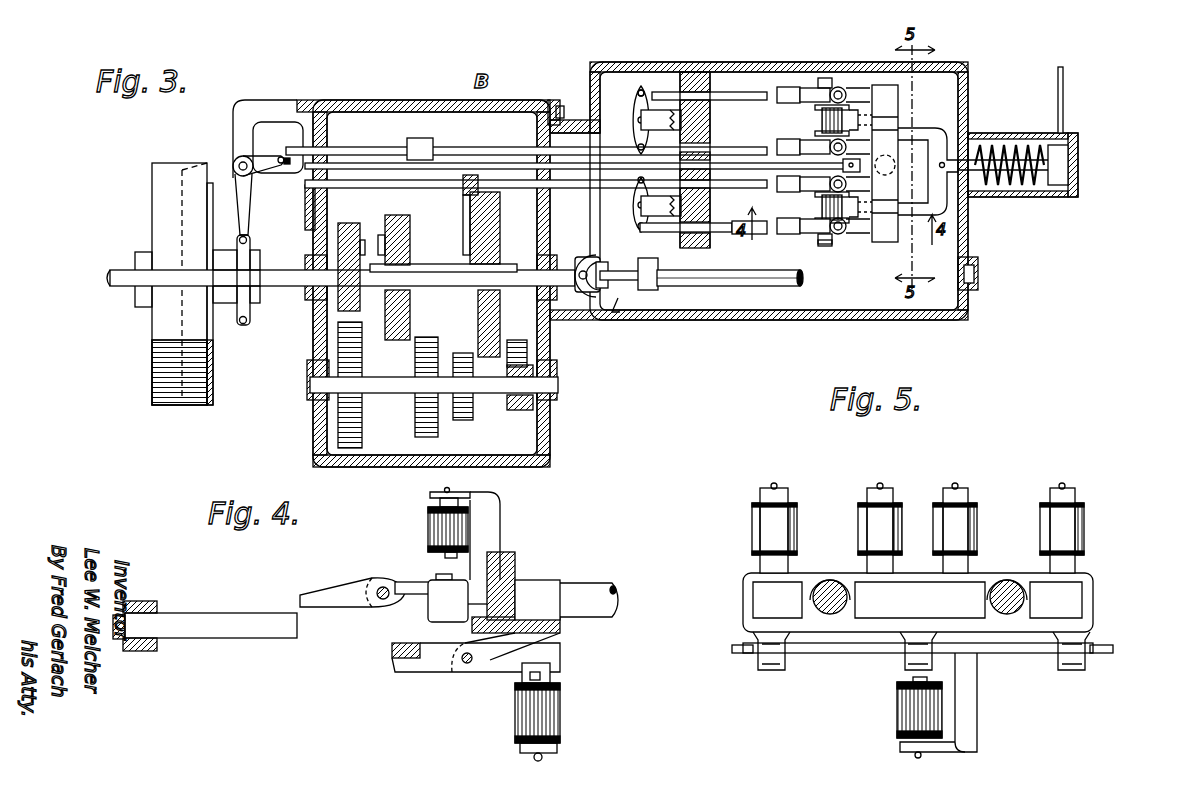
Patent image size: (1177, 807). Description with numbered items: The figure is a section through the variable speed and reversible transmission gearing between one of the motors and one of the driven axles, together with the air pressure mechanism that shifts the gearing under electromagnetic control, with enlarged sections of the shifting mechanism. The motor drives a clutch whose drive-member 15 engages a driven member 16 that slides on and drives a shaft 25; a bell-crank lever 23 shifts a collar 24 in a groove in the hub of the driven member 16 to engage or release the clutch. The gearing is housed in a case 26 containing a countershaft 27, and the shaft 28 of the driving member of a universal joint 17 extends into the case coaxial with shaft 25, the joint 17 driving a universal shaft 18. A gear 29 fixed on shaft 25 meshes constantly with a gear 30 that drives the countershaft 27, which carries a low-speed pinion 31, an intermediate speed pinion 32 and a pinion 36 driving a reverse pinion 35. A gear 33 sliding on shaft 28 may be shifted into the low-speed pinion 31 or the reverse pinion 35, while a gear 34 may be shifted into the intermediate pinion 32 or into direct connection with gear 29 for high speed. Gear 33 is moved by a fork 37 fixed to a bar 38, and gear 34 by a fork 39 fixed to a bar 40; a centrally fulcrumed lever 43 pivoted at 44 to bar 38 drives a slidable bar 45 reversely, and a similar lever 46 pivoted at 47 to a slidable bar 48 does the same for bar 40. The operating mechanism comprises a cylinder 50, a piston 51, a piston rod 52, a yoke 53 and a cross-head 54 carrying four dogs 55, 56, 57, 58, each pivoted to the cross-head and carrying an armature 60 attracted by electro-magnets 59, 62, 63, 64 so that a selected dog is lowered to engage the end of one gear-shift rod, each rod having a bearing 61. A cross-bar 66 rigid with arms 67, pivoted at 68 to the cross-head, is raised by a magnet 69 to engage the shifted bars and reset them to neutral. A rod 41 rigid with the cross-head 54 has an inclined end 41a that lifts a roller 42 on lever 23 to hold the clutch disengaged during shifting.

In FIG. 3, the drive-member 15 is at (190, 400).
In FIG. 3, the driven member 16 is at (213, 352).
In FIG. 3, the universal joint 17 is at (616, 314).
In FIG. 3, the universal shaft 18 is at (755, 287).
In FIG. 3, the bell-crank lever 23 is at (250, 194).
In FIG. 3, the collar 24 is at (255, 287).
In FIG. 3, the shaft 25 is at (280, 270).
In FIG. 3, the case 26 is at (548, 430).
In FIG. 3, the countershaft 27 is at (558, 380).
In FIG. 3, the shaft 28 is at (572, 262).
In FIG. 3, the gear 29 is at (348, 232).
In FIG. 3, the gear 30 is at (362, 432).
In FIG. 3, the low-speed pinion 31 is at (473, 416).
In FIG. 3, the intermediate or second speed pinion 32 is at (438, 432).
In FIG. 3, the gear 33 is at (500, 300).
In FIG. 3, the gear 34 is at (410, 316).
In FIG. 3, the reverse pinion 35 is at (520, 340).
In FIG. 3, the pinion 36 is at (518, 410).
In FIG. 3, the fork 37 is at (463, 214).
In FIG. 3, the bar 38 is at (580, 188).
In FIG. 3, the fork 39 is at (414, 208).
In FIG. 3, the bar 40 is at (470, 147).
In FIG. 3, the rod 41 is at (506, 150).
In FIG. 3, the inclined end 41a is at (288, 158).
In FIG. 3, the roller 42 is at (280, 157).
In FIG. 3, the centrally fulcrumed lever 43 is at (632, 222).
In FIG. 3, the pivot 44 is at (635, 186).
In FIG. 3, the slidable bar 45 is at (664, 232).
In FIG. 4, the slidable bar 45 is at (244, 613).
In FIG. 3, the centrally pivoted lever 46 is at (634, 106).
In FIG. 3, the pivot 47 is at (638, 97).
In FIG. 3, the slidable bar 48 is at (736, 100).
In FIG. 3, the cylinder 50 is at (998, 192).
In FIG. 3, the piston 51 is at (1058, 192).
In FIG. 3, the piston rod 52 is at (1026, 192).
In FIG. 3, the yoke 53 is at (930, 128).
In FIG. 4, the yoke 53 is at (584, 590).
In FIG. 5, the yoke 53 is at (990, 595).
In FIG. 3, the cross-head 54 is at (898, 230).
In FIG. 4, the cross-head 54 is at (505, 580).
In FIG. 5, the cross-head 54 is at (1093, 583).
In FIG. 3, the dog 55 is at (812, 236).
In FIG. 4, the dog 55 is at (350, 580).
In FIG. 3, the dog 56 is at (786, 190).
In FIG. 3, the dog 57 is at (778, 144).
In FIG. 3, the dog 58 is at (784, 87).
In FIG. 3, the electro-magnet 59 is at (828, 244).
In FIG. 4, the electro-magnet 59 is at (430, 522).
In FIG. 5, the electro-magnet 59 is at (798, 515).
In FIG. 4, the armature 60 is at (438, 574).
In FIG. 3, the bearing 61 is at (712, 235).
In FIG. 4, the bearing 61 is at (152, 601).
In FIG. 3, the electro-magnet 62 is at (842, 207).
In FIG. 5, the electro-magnet 62 is at (902, 505).
In FIG. 3, the electro-magnet 63 is at (842, 120).
In FIG. 5, the electro-magnet 63 is at (978, 512).
In FIG. 3, the electro-magnet 64 is at (840, 86).
In FIG. 5, the electro-magnet 64 is at (1086, 514).
In FIG. 3, the cross-bar 66 is at (834, 271).
In FIG. 4, the cross-bar 66 is at (400, 672).
In FIG. 5, the cross-bar 66 is at (850, 653).
In FIG. 4, the arms 67 is at (444, 672).
In FIG. 5, the arms 67 is at (772, 670).
In FIG. 4, the pivot 68 is at (472, 666).
In FIG. 5, the pivot 68 is at (752, 660).
In FIG. 3, the magnet 69 is at (890, 155).
In FIG. 4, the magnet 69 is at (560, 714).
In FIG. 5, the magnet 69 is at (897, 712).